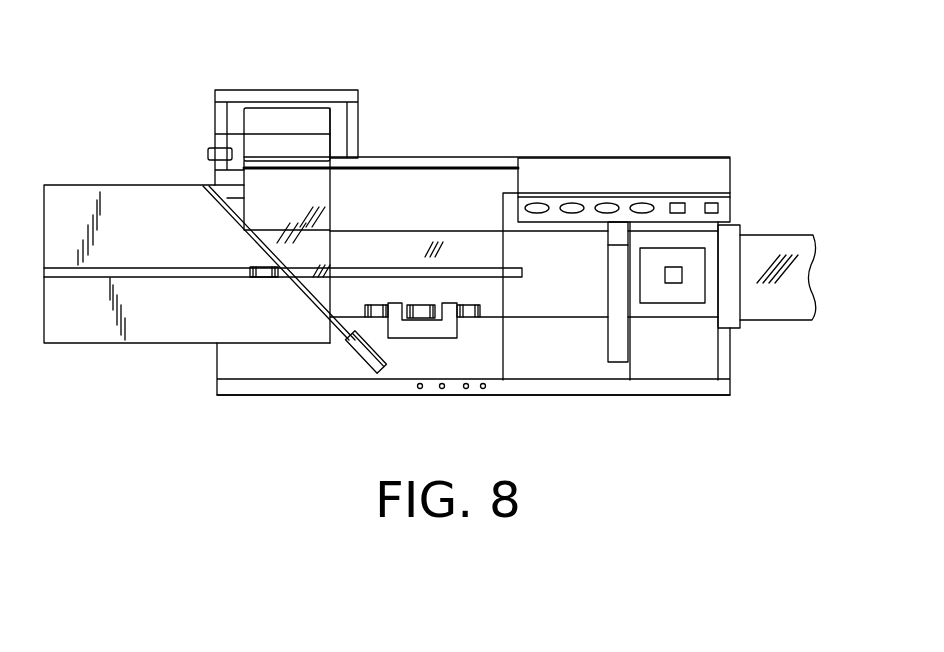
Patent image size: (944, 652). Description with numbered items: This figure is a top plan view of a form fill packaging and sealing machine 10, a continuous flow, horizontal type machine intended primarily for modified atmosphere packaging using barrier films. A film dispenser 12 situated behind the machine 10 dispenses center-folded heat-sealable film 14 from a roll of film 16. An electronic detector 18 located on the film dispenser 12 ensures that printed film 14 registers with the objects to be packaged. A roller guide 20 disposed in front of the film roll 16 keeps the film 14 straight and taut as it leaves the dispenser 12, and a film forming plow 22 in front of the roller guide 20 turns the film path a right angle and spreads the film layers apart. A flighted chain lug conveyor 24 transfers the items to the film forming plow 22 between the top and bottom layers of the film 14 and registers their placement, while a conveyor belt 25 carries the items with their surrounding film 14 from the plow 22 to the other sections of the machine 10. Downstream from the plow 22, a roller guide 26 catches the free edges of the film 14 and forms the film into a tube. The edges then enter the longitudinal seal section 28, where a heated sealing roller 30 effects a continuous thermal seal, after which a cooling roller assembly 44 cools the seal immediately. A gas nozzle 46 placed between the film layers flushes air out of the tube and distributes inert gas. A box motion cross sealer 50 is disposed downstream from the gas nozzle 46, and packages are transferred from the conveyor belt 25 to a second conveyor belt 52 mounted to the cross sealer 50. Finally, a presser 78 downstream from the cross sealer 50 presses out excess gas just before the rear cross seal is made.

The form fill packaging and sealing machine 10 is at (498, 77).
The film dispenser 12 is at (293, 88).
The film 14 is at (318, 195).
The roll of film 16 is at (303, 125).
The electronic detector 18 is at (210, 152).
The roller guide 20 is at (328, 160).
The film forming plow 22 is at (283, 280).
The flighted chain lug conveyor 24 is at (119, 186).
The conveyor belt 25 is at (411, 262).
The roller guide 26 is at (375, 306).
The longitudinal seal section 28 is at (423, 347).
The heated sealing roller 30 is at (413, 303).
The cooling roller assembly 44 is at (478, 305).
The gas nozzle 46 is at (527, 247).
The cross sealer 50 is at (623, 362).
The second conveyor belt 52 is at (543, 363).
The presser 78 is at (683, 296).